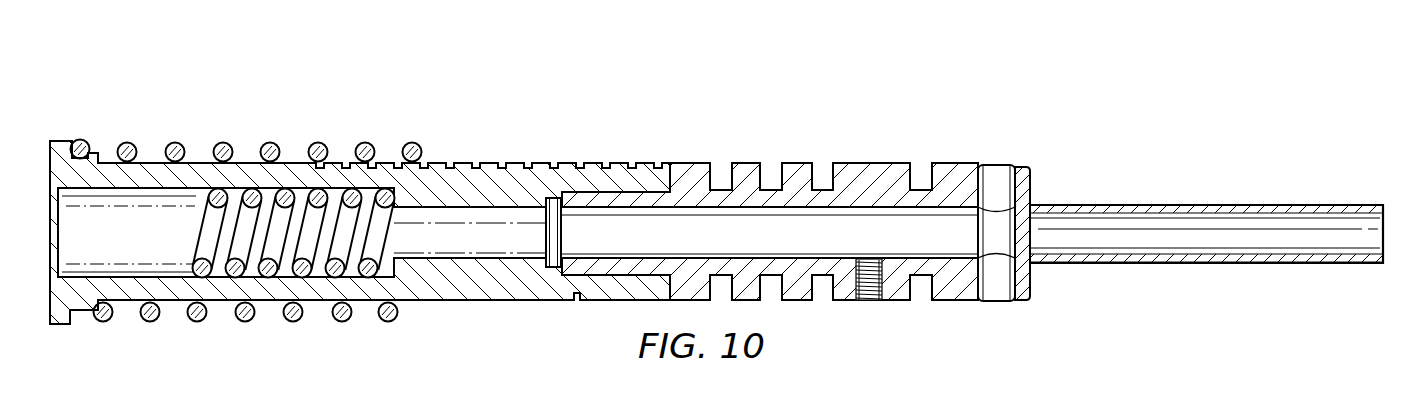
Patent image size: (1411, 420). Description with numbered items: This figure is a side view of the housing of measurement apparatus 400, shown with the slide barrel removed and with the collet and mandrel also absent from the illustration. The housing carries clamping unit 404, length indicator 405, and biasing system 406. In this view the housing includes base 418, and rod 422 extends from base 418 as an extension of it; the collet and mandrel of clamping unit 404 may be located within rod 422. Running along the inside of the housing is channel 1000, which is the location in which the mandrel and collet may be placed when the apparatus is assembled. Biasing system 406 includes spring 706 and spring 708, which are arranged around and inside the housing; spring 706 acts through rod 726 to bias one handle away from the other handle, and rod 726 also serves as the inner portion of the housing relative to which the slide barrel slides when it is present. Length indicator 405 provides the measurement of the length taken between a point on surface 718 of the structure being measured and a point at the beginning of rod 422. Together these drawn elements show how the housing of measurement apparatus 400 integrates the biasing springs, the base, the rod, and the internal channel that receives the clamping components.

The measurement apparatus 400 is at (630, 76).
The clamping unit 404 is at (1196, 158).
The length indicator 405 is at (513, 185).
The biasing system 406 is at (174, 104).
The base 418 is at (690, 165).
The rod 422 is at (1080, 205).
The spring 706 is at (268, 145).
The spring 708 is at (195, 268).
The surface 718 is at (448, 185).
The inner portion 726 is at (878, 220).
The channel 1000 is at (1163, 247).